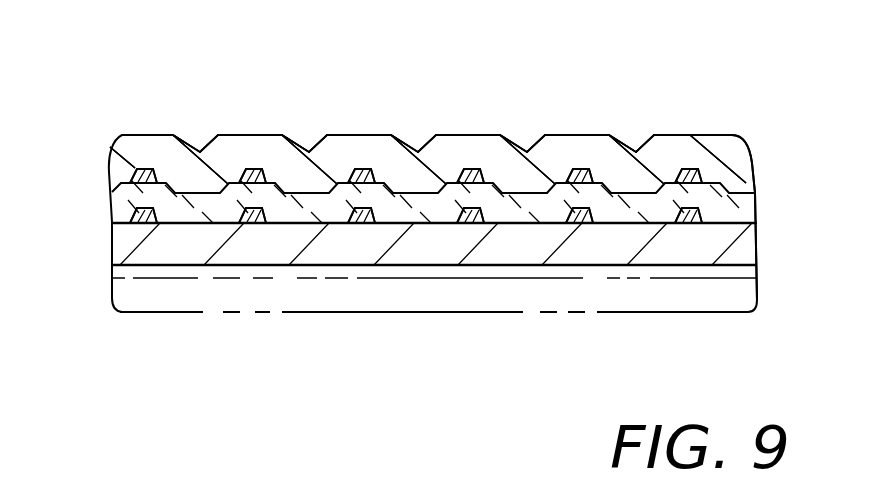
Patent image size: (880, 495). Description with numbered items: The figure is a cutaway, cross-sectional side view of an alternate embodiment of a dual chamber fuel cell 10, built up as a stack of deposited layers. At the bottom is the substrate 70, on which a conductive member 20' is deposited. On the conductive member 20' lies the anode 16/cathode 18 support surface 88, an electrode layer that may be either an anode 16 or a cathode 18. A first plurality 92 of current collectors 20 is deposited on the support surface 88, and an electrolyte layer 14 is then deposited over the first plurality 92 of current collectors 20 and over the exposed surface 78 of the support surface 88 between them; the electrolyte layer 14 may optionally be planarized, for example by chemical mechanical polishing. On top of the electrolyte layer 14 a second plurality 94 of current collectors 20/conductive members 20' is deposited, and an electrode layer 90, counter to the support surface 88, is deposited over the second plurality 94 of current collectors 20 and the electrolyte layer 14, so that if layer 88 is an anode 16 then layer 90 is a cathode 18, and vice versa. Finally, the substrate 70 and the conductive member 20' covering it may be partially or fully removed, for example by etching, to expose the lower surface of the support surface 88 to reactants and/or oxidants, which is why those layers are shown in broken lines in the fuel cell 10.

The fuel cell 10 is at (123, 113).
The electrolyte layer 14 is at (758, 205).
The anode 16 is at (428, 159).
The cathode 18 is at (428, 159).
The current collectors 20 is at (416, 196).
The conductive member 20' is at (434, 329).
The substrate 70 is at (163, 303).
The exposed surface 78 is at (112, 218).
The anode/cathode support surface 88 is at (690, 255).
The electrode layer 90 is at (667, 145).
The first plurality of current collectors 92 is at (358, 224).
The second plurality of current collectors 94 is at (567, 168).